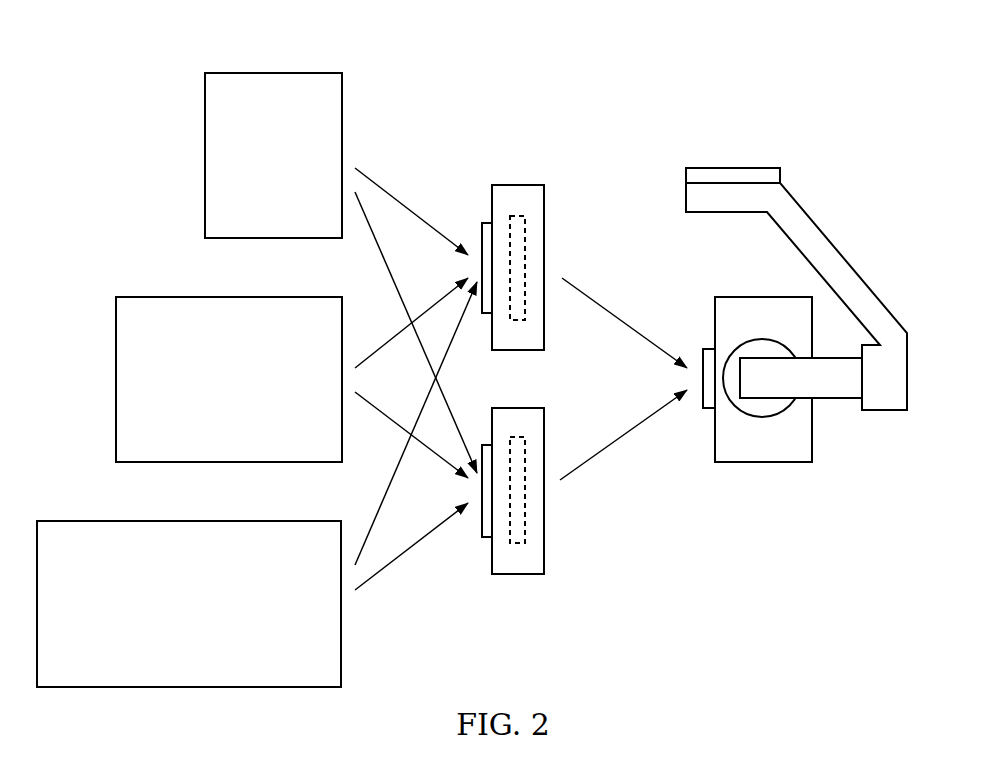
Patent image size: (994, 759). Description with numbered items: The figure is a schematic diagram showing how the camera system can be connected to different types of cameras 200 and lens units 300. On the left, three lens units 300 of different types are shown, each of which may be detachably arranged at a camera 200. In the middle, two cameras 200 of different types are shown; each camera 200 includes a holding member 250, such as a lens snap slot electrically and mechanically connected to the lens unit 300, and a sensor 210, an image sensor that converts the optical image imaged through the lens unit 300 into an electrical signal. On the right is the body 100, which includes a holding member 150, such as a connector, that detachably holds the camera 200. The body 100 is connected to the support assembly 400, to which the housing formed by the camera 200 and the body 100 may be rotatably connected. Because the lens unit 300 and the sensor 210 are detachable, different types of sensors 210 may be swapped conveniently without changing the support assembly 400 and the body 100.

The lens unit 300 is at (270, 73).
The camera 200 is at (515, 185).
The holding member 250 is at (486, 226).
The sensor 210 is at (527, 231).
The body 100 is at (762, 297).
The holding member 150 is at (710, 347).
The support assembly 400 is at (846, 260).